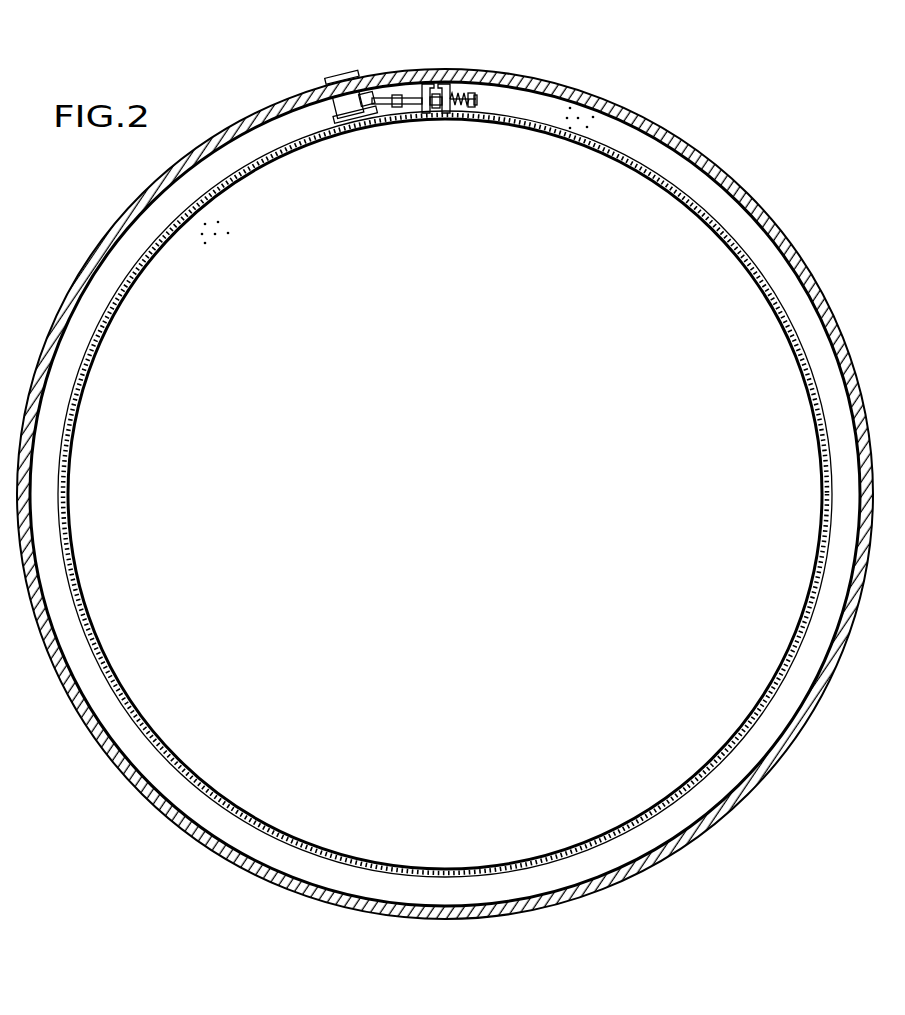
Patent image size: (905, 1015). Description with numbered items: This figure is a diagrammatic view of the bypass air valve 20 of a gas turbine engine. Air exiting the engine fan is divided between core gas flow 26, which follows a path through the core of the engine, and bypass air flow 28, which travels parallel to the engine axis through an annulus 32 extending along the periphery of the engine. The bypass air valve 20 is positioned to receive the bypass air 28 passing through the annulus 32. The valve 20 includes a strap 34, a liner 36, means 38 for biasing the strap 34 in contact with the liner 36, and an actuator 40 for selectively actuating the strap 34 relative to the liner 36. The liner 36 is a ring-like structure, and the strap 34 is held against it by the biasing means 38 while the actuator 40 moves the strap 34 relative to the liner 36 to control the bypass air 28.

The bypass air valve 20 is at (445, 465).
The core gas flow 26 is at (222, 242).
The bypass air flow 28 is at (588, 122).
The annulus 32 is at (663, 152).
The strap 34 is at (445, 451).
The liner 36 is at (492, 118).
The means for biasing the strap 38 is at (439, 62).
The actuator 40 is at (386, 121).